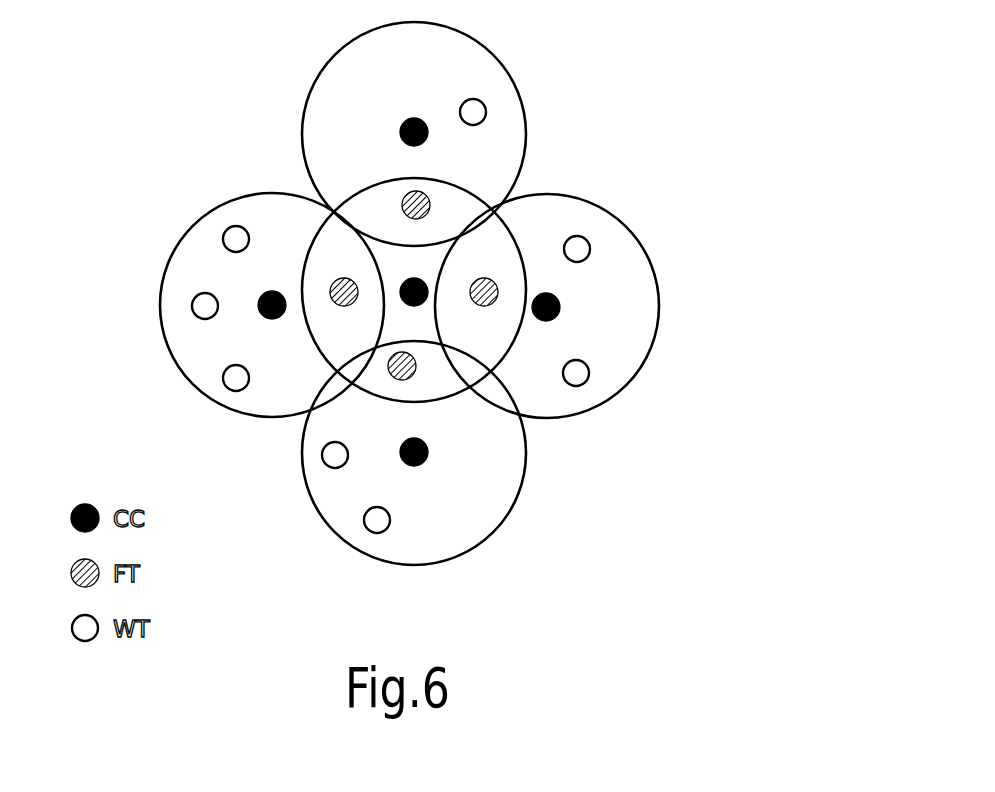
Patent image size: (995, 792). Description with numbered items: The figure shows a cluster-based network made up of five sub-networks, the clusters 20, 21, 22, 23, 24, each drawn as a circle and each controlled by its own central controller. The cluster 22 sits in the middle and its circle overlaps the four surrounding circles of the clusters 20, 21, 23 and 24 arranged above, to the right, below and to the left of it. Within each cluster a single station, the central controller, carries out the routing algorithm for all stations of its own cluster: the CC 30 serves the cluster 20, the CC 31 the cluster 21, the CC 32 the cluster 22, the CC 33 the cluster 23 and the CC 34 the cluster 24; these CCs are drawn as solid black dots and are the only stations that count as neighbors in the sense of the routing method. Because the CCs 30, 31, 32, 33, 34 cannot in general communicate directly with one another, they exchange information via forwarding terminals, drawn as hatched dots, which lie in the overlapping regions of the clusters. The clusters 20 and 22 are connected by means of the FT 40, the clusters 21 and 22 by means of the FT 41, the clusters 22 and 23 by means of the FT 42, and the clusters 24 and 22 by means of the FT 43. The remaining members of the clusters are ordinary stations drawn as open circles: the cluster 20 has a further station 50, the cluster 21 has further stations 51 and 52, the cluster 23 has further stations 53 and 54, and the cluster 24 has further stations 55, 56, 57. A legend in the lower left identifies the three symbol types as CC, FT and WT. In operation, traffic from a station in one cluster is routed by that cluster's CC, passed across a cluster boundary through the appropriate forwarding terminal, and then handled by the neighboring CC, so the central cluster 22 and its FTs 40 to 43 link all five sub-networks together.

The cluster 20 is at (494, 48).
The cluster 21 is at (600, 206).
The cluster 22 is at (470, 192).
The cluster 23 is at (494, 534).
The cluster 24 is at (232, 201).
The central controller 30 is at (415, 118).
The central controller 31 is at (560, 306).
The central controller 32 is at (422, 303).
The central controller 33 is at (428, 452).
The central controller 34 is at (274, 320).
The forwarding terminal 40 is at (412, 192).
The forwarding terminal 41 is at (491, 279).
The forwarding terminal 42 is at (399, 380).
The forwarding terminal 43 is at (335, 279).
The further station 50 is at (487, 112).
The further station 51 is at (591, 249).
The further station 52 is at (590, 373).
The further station 53 is at (363, 521).
The further station 54 is at (321, 455).
The further station 55 is at (222, 240).
The further station 56 is at (191, 306).
The further station 57 is at (222, 378).